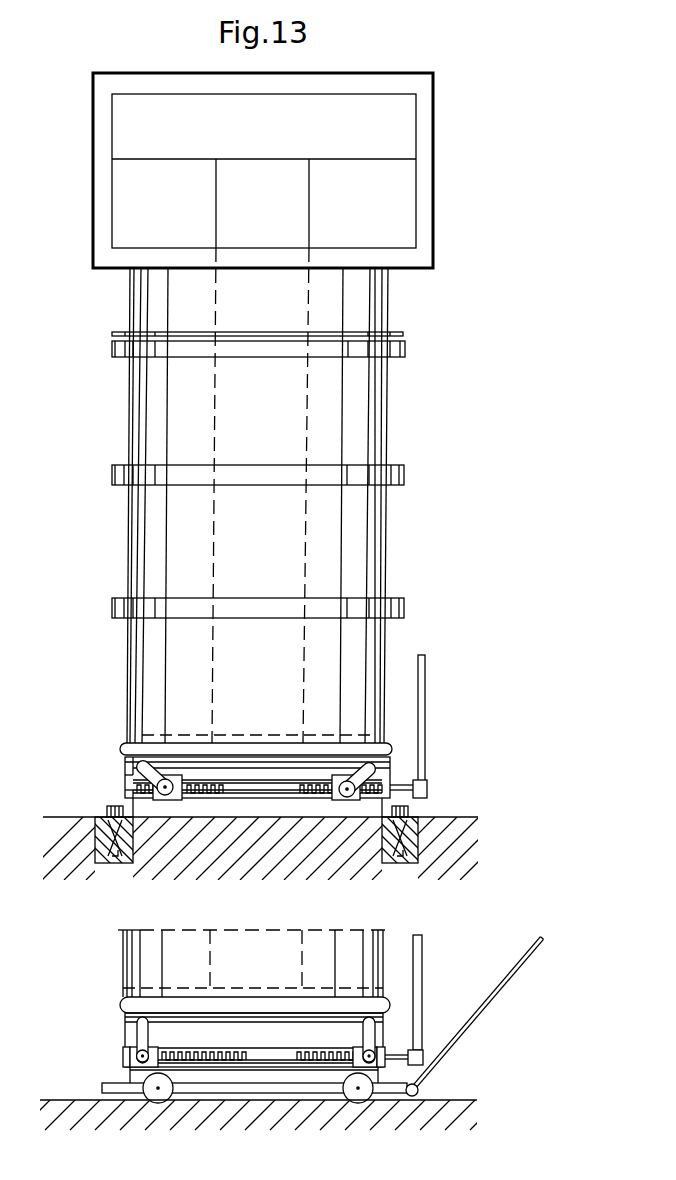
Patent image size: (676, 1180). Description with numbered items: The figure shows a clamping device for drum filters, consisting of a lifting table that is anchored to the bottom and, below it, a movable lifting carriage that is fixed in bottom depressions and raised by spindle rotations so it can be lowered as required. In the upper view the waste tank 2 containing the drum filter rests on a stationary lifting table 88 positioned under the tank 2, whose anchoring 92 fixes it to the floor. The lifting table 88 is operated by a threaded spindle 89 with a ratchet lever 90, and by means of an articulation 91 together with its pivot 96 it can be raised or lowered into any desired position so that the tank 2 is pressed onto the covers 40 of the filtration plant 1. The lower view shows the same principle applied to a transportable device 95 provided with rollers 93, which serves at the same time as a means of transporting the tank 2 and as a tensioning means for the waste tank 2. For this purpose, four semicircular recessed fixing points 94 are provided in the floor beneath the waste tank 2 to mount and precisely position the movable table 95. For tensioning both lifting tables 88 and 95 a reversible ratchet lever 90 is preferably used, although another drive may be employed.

The filtration plant 1 is at (88, 468).
The waste tank 2 is at (380, 428).
The covers 40 is at (372, 310).
The lifting table 88 is at (125, 780).
The threaded spindle 89 is at (280, 790).
The ratchet lever 90 is at (426, 712).
The articulation 91 is at (163, 773).
The anchoring 92 is at (412, 812).
The rollers 93 is at (362, 1082).
The fixing points 94 is at (342, 1106).
The transportable device 95 is at (125, 1019).
The pivot pin 96 is at (184, 782).